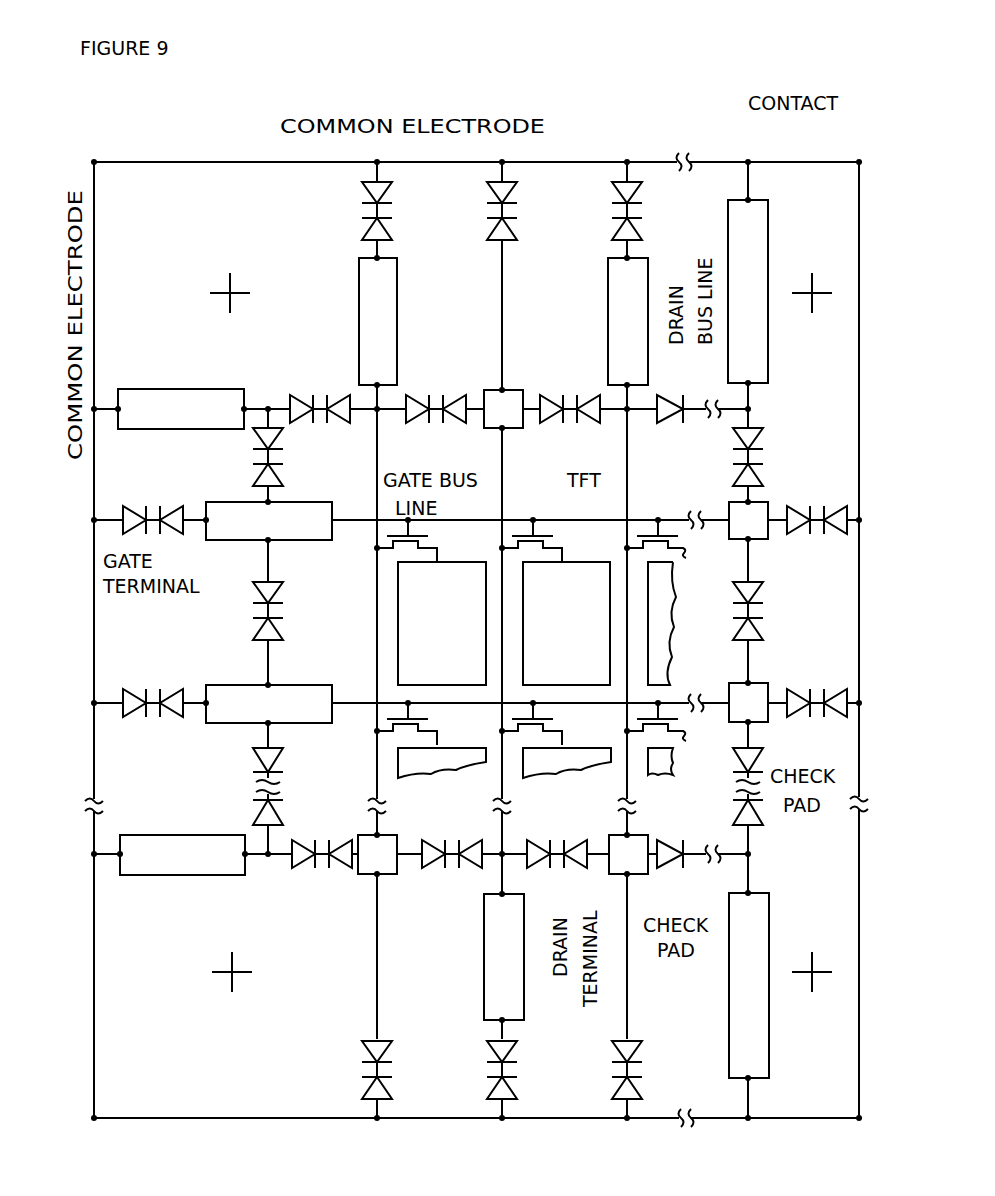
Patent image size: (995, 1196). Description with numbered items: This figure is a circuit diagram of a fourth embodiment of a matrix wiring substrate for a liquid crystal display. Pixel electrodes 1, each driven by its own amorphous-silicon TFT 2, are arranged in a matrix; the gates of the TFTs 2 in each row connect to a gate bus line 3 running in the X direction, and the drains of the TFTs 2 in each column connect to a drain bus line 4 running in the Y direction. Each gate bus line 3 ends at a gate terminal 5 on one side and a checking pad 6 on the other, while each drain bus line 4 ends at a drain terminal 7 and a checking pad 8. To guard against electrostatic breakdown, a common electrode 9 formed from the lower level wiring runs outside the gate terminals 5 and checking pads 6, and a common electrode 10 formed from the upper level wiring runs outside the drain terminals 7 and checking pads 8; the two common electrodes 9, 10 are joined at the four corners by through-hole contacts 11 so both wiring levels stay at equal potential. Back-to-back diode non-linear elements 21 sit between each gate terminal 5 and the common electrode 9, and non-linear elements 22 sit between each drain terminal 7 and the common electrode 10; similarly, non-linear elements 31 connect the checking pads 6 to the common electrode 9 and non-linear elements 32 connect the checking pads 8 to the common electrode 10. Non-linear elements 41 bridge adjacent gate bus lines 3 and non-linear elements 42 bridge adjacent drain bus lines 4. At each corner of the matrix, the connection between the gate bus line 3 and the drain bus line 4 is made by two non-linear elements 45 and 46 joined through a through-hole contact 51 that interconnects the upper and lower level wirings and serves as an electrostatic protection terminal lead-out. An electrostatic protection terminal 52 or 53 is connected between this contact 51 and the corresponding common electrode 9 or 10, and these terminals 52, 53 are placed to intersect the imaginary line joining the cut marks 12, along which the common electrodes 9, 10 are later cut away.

The pixel electrode 1 is at (398, 625).
The TFT 2 is at (430, 534).
The gate bus line 3 is at (340, 520).
The drain bus line 4 is at (380, 443).
The gate terminal 5 is at (228, 540).
The checking pad 6 is at (728, 504).
The drain terminal 7 is at (397, 302).
The checking pad 8 is at (507, 390).
The common electrode 9 is at (94, 642).
The common electrode 10 is at (220, 162).
The through-hole contact 11 is at (100, 162).
The cut mark 12 is at (227, 292).
The non-linear resistance element 21 is at (155, 500).
The non-linear resistance element 22 is at (393, 211).
The non-linear element 31 is at (814, 545).
The non-linear element 32 is at (518, 211).
The non-linear element 41 is at (259, 606).
The non-linear element 42 is at (437, 394).
The non-linear element 45 is at (322, 394).
The non-linear element 46 is at (283, 453).
The through-hole contact 51 is at (268, 400).
The electrostatic protection terminal 52 is at (182, 389).
The electrostatic protection terminal 53 is at (768, 348).